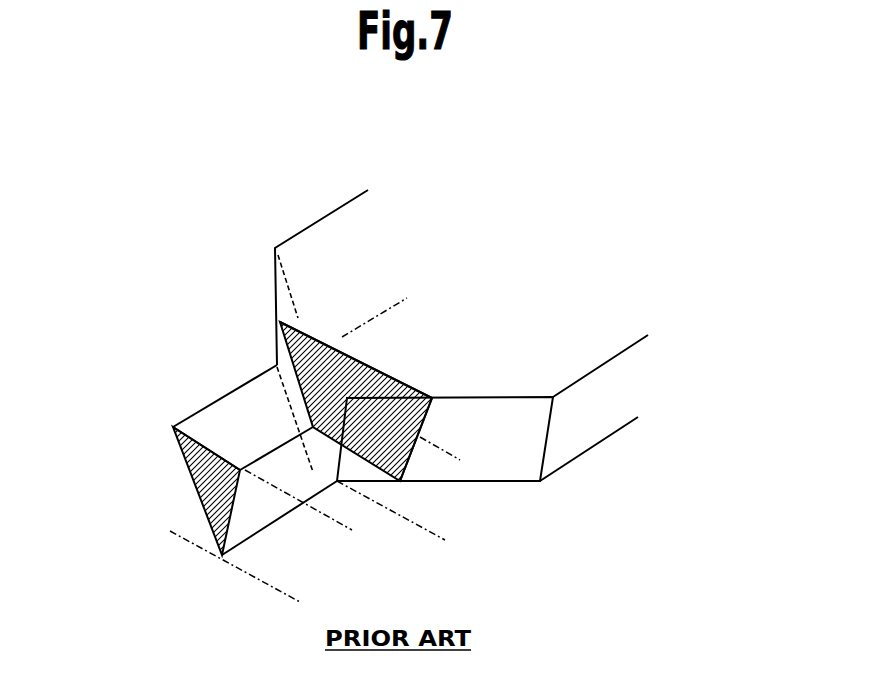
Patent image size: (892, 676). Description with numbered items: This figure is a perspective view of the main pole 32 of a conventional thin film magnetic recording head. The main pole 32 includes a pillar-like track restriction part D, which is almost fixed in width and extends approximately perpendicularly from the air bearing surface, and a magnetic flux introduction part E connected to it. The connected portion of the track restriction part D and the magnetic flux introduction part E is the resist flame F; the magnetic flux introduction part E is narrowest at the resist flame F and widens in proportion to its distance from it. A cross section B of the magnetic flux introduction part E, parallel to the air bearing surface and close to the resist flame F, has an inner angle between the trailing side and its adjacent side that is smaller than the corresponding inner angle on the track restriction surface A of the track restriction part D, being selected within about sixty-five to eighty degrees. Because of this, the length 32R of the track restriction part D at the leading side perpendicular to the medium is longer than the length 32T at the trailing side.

The main pole 32 is at (518, 276).
The length at the trailing side 32T is at (337, 515).
The length at the leading side 32R is at (295, 592).
The track restriction surface A is at (190, 480).
The cross section B is at (342, 350).
The track restriction part D is at (225, 420).
The magnetic flux introduction part E is at (301, 316).
The resist flame F is at (258, 358).